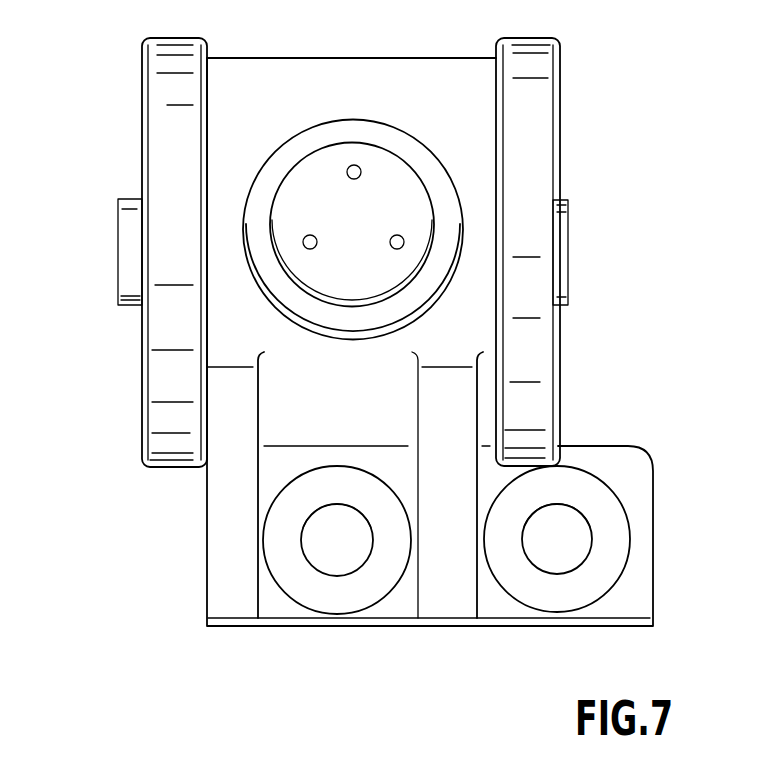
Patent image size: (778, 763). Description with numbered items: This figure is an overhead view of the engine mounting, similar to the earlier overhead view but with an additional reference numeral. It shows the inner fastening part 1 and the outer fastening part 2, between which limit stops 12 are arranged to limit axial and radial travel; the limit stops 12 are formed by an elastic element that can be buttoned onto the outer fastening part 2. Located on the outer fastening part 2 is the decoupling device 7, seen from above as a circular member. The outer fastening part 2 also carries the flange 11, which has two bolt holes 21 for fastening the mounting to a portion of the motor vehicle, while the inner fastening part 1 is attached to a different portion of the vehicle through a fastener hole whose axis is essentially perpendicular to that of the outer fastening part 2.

The inner fastening part 1 is at (128, 271).
The outer fastening part 2 is at (476, 78).
The decoupling device 7 is at (402, 212).
The flange 11 is at (282, 557).
The limit stops 12 is at (538, 138).
The bolt holes 21 is at (326, 573).